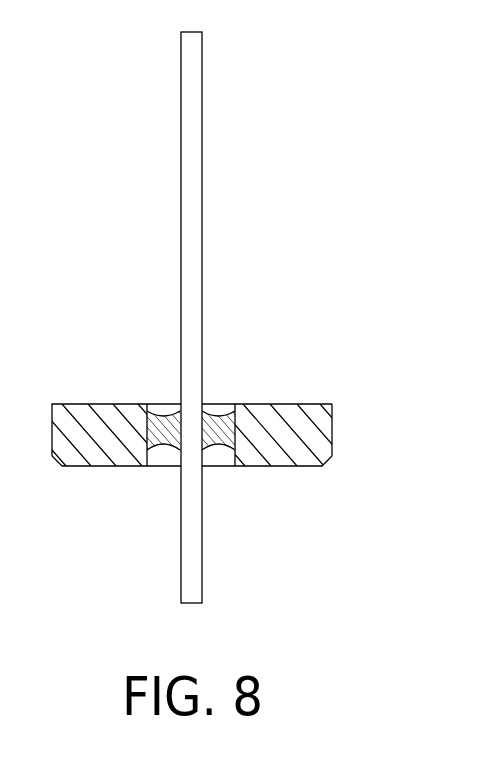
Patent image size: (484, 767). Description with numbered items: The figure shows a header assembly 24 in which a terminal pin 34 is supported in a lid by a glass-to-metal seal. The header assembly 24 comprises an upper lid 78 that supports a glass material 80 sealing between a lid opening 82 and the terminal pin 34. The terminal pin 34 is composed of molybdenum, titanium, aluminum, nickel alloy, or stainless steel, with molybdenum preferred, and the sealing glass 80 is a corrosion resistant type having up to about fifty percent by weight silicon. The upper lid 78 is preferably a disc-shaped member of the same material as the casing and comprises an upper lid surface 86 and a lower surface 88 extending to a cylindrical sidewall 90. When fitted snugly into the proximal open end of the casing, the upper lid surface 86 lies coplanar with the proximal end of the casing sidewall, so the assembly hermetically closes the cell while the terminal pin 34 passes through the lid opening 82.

The header assembly 24 is at (282, 298).
The terminal pin 34 is at (203, 106).
The upper lid 78 is at (303, 418).
The glass material 80 is at (218, 405).
The lid opening 82 is at (150, 459).
The upper lid surface 86 is at (73, 402).
The lower surface 88 is at (73, 467).
The cylindrical sidewall 90 is at (332, 423).